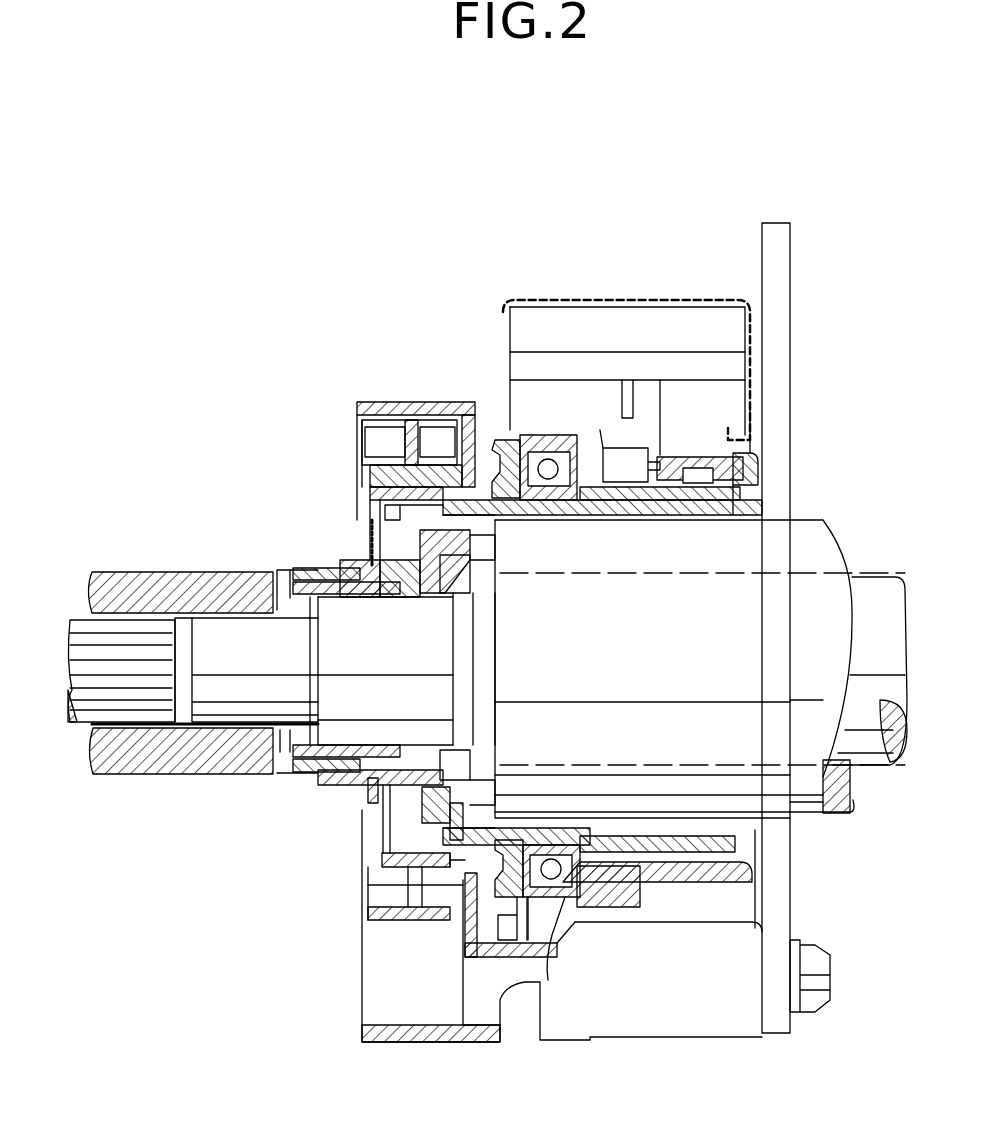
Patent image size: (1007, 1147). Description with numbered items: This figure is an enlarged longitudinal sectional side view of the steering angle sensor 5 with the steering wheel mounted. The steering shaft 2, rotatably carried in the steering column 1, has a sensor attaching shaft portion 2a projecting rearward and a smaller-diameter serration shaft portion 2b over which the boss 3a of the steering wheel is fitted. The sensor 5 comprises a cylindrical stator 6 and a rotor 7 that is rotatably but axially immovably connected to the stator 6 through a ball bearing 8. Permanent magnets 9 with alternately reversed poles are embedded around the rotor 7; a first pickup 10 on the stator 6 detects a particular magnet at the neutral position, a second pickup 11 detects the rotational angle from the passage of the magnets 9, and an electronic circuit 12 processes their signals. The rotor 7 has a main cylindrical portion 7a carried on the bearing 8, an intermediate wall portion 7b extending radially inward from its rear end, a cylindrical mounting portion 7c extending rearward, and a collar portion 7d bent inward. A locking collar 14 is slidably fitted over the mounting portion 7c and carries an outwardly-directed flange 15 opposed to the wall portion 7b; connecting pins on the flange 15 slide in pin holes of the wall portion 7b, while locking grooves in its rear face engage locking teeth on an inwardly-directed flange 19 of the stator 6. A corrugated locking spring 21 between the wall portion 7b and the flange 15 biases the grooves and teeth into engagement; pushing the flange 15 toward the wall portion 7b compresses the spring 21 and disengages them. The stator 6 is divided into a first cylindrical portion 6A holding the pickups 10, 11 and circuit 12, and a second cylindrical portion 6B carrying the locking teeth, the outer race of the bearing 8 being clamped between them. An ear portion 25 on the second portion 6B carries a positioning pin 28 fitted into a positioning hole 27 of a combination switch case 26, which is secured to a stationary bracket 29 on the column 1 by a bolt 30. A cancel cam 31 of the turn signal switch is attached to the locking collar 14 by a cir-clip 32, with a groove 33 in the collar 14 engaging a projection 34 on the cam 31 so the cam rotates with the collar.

The steering column 1 is at (822, 548).
The steering shaft 2 is at (878, 590).
The sensor attaching shaft portion 2a is at (343, 770).
The serration shaft portion 2b is at (122, 712).
The boss 3a is at (175, 580).
The steering angle sensor 5 is at (625, 295).
The stator 6 is at (745, 475).
The first cylindrical portion 6A is at (666, 878).
The second cylindrical portion 6B is at (548, 905).
The rotor 7 is at (730, 500).
The main cylindrical portion 7a is at (582, 502).
The intermediate wall portion 7b is at (498, 830).
The cylindrical mounting portion 7c is at (381, 671).
The collar portion 7d is at (305, 628).
The ball bearing 8 is at (596, 838).
The permanent magnets 9 is at (668, 500).
The first pickup 10 is at (698, 468).
The second pickup 11 is at (610, 452).
The electronic circuit 12 is at (693, 368).
The locking collar 14 is at (300, 565).
The outwardly-directed flange 15 is at (432, 906).
The inwardly-directed flange 19 is at (370, 510).
The corrugated locking spring 21 is at (437, 468).
The ear portion 25 is at (555, 948).
The combination switch case 26 is at (641, 1040).
The positioning hole 27 is at (502, 950).
The positioning pin 28 is at (470, 958).
The stationary bracket 29 is at (778, 333).
The bolt 30 is at (826, 978).
The cancel cam 31 is at (370, 810).
The cir-clip 32 is at (352, 578).
The groove 33 is at (372, 535).
The projection 34 is at (408, 585).